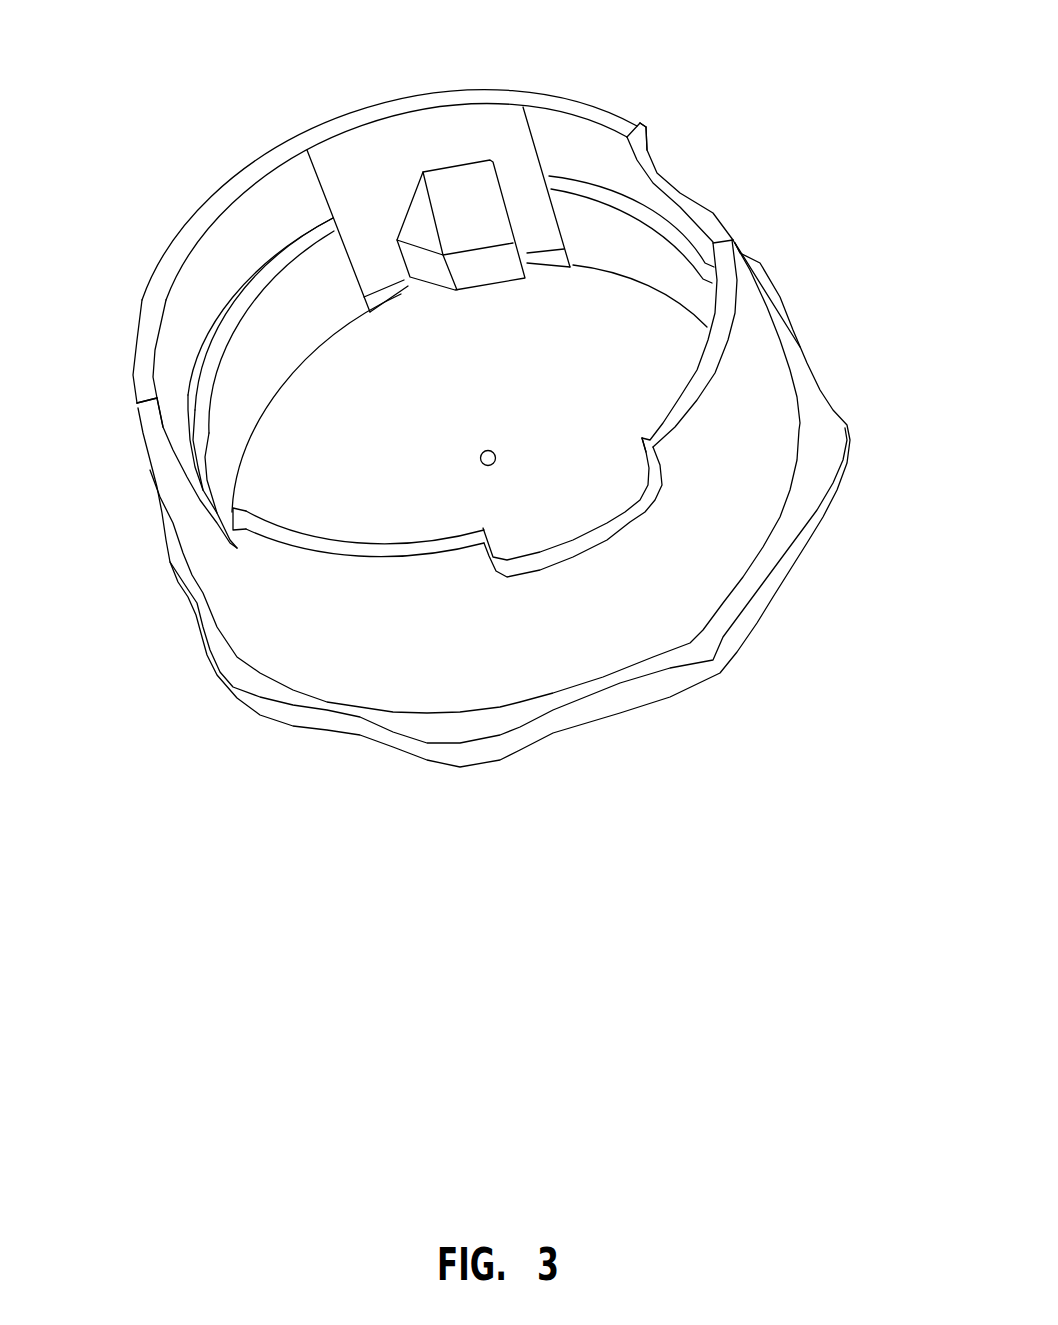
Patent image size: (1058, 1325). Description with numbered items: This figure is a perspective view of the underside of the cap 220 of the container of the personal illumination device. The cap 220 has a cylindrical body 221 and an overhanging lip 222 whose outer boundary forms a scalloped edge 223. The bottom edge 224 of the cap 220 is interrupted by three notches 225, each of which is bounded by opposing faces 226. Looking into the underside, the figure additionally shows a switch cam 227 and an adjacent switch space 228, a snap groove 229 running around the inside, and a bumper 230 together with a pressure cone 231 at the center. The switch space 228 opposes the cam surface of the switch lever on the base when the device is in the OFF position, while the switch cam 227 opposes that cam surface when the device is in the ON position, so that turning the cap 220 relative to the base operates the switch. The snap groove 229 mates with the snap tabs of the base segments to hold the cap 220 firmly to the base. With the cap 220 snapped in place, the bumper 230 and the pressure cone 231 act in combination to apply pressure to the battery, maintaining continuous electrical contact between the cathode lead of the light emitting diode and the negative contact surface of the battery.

The cap 220 is at (497, 434).
The cylindrical body 221 is at (255, 605).
The overhanging lip 222 is at (815, 403).
The scalloped edge 223 is at (838, 473).
The bottom edge 224 is at (435, 307).
The notches 225 is at (722, 189).
The opposing faces 226 is at (647, 150).
The switch cam 227 is at (487, 267).
The switch space 228 is at (372, 182).
The snap groove 229 is at (280, 260).
The bumper 230 is at (480, 452).
The pressure cone 231 is at (465, 388).